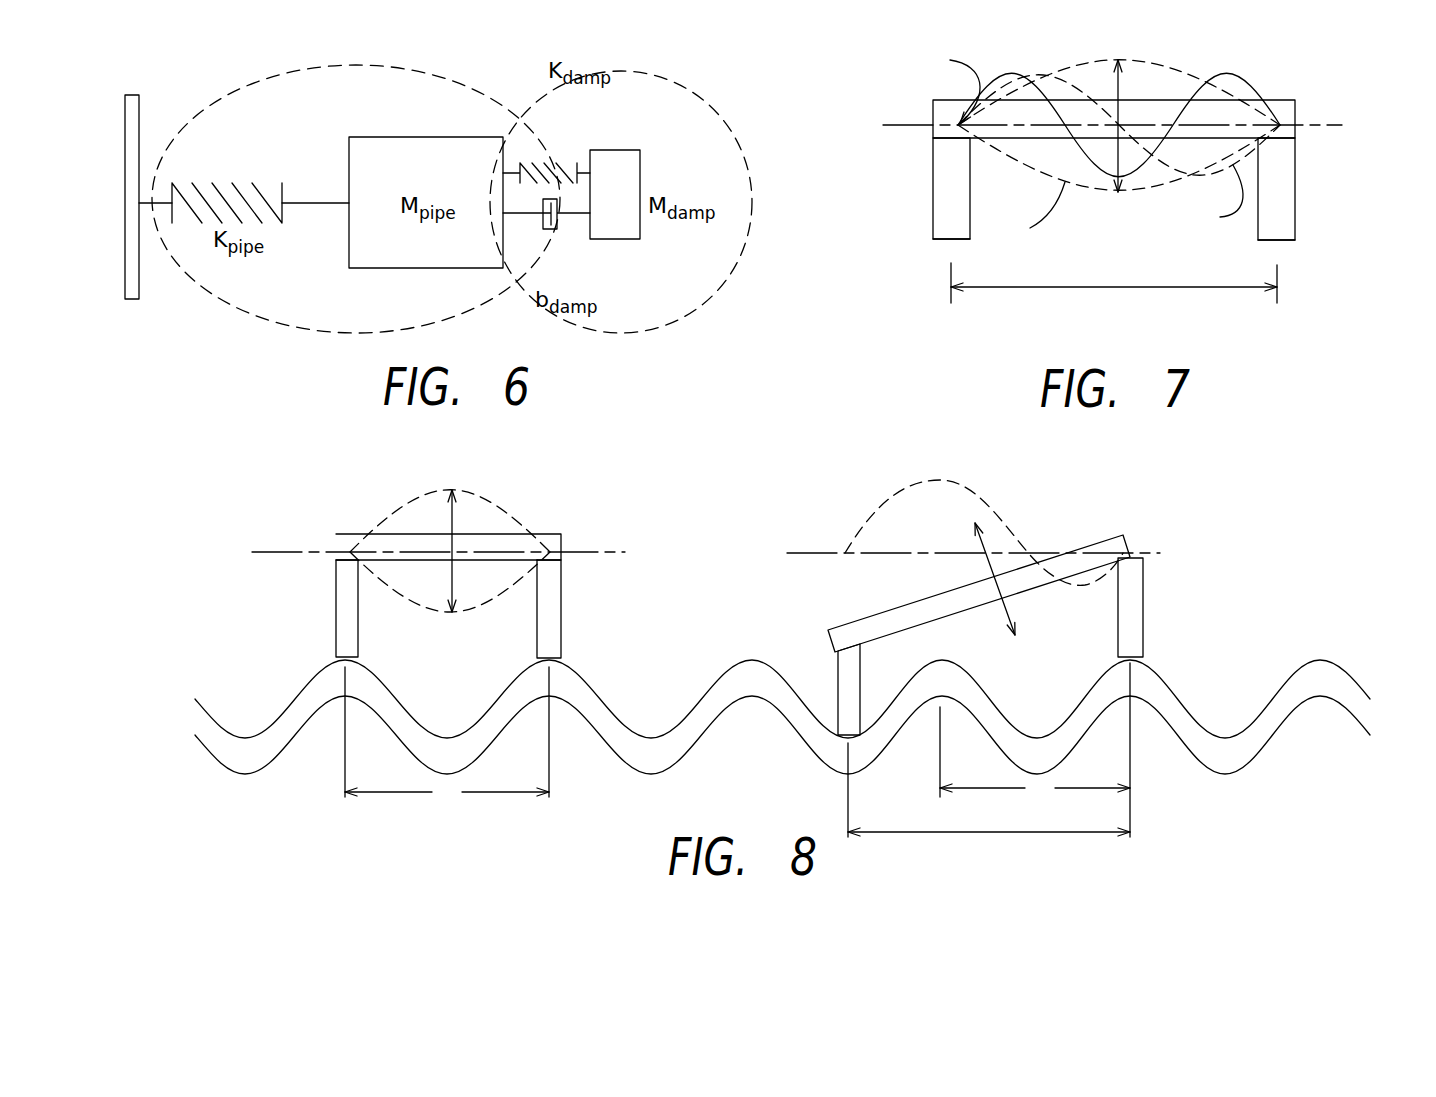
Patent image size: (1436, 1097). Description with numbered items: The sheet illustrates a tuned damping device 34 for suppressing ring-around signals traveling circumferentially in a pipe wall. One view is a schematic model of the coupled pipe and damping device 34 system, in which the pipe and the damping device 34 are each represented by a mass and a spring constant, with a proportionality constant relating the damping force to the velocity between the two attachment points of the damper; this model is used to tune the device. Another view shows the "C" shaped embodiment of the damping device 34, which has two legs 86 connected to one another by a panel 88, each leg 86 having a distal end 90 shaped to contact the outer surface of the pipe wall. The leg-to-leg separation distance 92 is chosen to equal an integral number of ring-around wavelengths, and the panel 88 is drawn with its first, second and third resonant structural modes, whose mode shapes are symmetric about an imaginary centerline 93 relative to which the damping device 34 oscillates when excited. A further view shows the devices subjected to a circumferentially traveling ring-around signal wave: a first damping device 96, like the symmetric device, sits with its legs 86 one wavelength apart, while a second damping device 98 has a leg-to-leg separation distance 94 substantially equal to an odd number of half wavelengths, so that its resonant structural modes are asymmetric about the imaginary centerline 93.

In FIG. 7, the damping device 34 is at (1318, 93).
In FIG. 8, the damping device 34 is at (607, 513).
In FIG. 7, the legs 86 is at (933, 205).
In FIG. 8, the legs 86 is at (336, 638).
In FIG. 7, the panel 88 is at (1278, 100).
In FIG. 8, the panel 88 is at (355, 533).
In FIG. 7, the distal end 90 is at (950, 240).
In FIG. 7, the leg-to-leg separation distance 92 is at (1130, 288).
In FIG. 8, the leg-to-leg separation distance 92 is at (383, 794).
In FIG. 7, the imaginary centerline 93 is at (903, 125).
In FIG. 8, the imaginary centerline 93 is at (270, 552).
In FIG. 8, the leg-to-leg separation distance 94 is at (935, 830).
In FIG. 8, the first damping device 96 is at (325, 583).
In FIG. 8, the second damping device 98 is at (1192, 540).